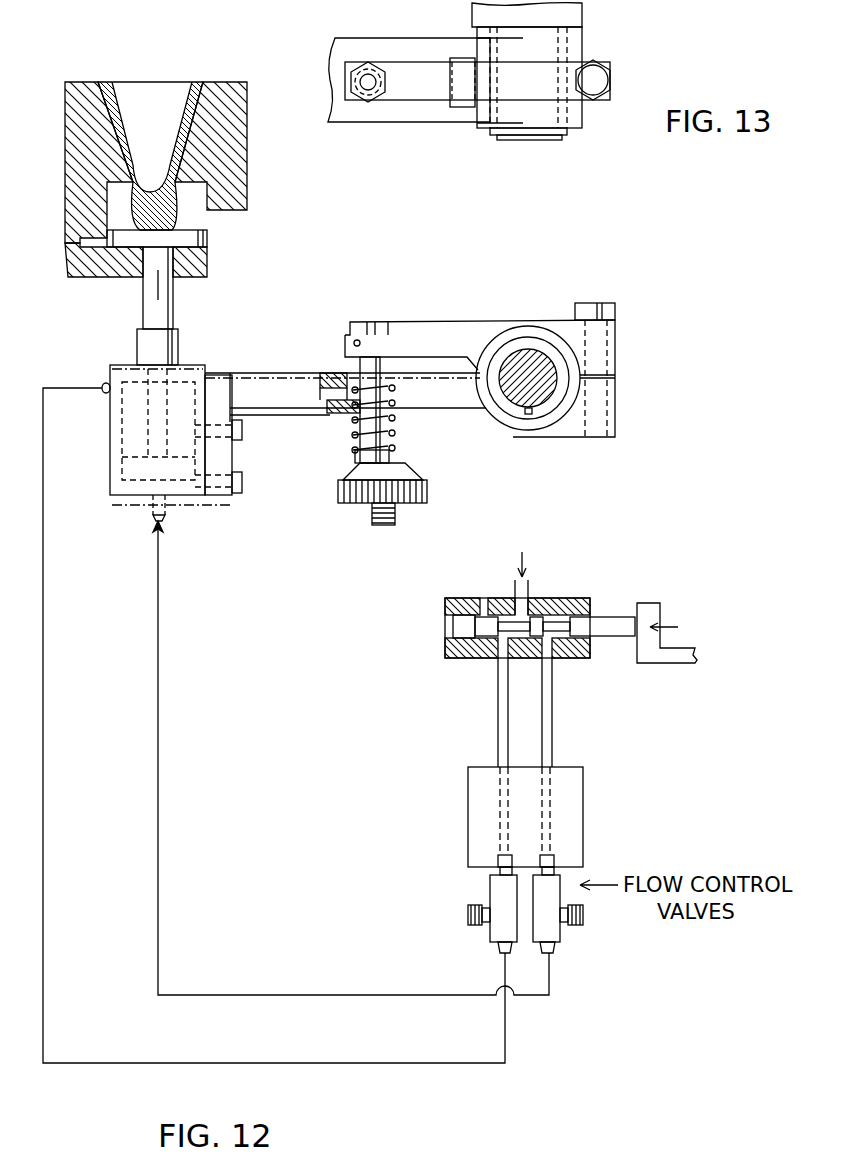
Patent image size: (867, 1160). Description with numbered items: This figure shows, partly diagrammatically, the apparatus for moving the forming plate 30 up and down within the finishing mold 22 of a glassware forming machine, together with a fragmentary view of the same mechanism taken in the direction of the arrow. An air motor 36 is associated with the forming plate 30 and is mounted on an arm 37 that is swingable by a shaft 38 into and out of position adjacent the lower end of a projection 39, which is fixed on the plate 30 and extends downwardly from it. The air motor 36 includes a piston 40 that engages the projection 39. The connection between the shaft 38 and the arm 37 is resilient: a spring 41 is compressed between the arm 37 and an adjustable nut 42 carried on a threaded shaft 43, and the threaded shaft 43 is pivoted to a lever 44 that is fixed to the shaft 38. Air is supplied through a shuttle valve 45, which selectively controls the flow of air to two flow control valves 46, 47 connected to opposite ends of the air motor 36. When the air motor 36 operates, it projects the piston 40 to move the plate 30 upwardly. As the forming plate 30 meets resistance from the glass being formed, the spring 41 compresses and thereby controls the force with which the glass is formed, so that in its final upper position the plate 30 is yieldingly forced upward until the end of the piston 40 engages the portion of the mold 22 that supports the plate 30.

In FIG. 12, the finishing mold 22 is at (245, 157).
In FIG. 12, the forming plate 30 is at (208, 238).
In FIG. 12, the air motor 36 is at (200, 360).
In FIG. 12, the arm 37 is at (275, 382).
In FIG. 13, the arm 37 is at (385, 113).
In FIG. 12, the shaft 38 is at (513, 360).
In FIG. 13, the shaft 38 is at (533, 140).
In FIG. 12, the projection 39 is at (172, 308).
In FIG. 12, the piston 40 is at (137, 343).
In FIG. 12, the spring 41 is at (393, 438).
In FIG. 12, the adjustable nut 42 is at (425, 490).
In FIG. 12, the threaded shaft 43 is at (395, 518).
In FIG. 12, the lever 44 is at (400, 328).
In FIG. 13, the lever 44 is at (413, 70).
In FIG. 12, the shuttle valve 45 is at (578, 598).
In FIG. 12, the flow control valve 46 is at (490, 885).
In FIG. 12, the flow control valve 47 is at (560, 883).